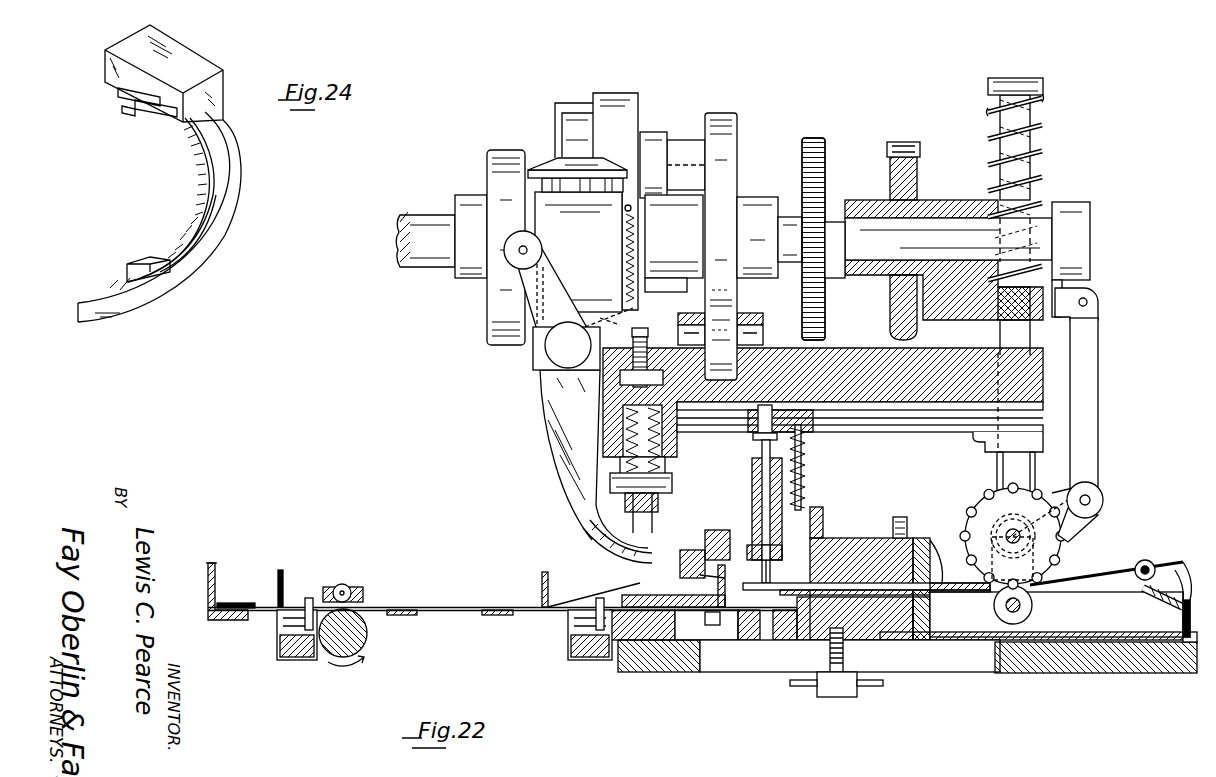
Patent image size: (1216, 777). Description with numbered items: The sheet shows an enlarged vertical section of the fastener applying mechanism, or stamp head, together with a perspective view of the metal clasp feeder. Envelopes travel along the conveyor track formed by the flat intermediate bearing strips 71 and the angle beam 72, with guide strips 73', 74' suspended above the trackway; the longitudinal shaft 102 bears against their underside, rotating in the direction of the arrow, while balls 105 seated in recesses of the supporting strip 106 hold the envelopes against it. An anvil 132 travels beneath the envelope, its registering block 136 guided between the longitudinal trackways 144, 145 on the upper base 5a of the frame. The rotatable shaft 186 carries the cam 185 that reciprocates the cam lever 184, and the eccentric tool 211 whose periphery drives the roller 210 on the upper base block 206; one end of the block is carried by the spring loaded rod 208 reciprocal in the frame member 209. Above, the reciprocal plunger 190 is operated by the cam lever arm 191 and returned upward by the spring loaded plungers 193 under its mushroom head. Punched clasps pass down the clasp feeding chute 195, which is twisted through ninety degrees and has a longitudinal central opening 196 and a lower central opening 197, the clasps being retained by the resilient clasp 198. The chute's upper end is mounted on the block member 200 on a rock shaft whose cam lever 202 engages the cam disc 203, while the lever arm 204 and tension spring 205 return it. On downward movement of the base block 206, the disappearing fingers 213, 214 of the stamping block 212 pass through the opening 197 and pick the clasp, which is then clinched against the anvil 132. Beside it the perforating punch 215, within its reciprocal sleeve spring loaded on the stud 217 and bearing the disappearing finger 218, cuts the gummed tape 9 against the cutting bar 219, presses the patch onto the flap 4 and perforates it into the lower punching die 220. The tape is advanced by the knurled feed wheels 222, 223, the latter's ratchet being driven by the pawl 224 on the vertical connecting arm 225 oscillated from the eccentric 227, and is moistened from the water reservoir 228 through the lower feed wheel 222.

In FIG. 22, the flap 4 is at (728, 612).
In FIG. 22, the upper base 5a is at (1020, 675).
In FIG. 22, the gummed tape 9 is at (795, 583).
In FIG. 22, the flat intermediate bearing strips 71 is at (482, 612).
In FIG. 22, the angle beam 72 is at (215, 578).
In FIG. 22, the guide strip 73' is at (299, 603).
In FIG. 22, the guide strip 74' is at (556, 610).
In FIG. 22, the longitudinal shaft 102 is at (367, 633).
In FIG. 22, the balls 105 is at (345, 587).
In FIG. 22, the supporting strip 106 is at (363, 590).
In FIG. 22, the anvil 132 is at (683, 587).
In FIG. 22, the registering block 136 is at (752, 565).
In FIG. 22, the longitudinal trackway 144 is at (717, 530).
In FIG. 22, the longitudinal trackway 145 is at (687, 550).
In FIG. 22, the cam lever 184 is at (653, 140).
In FIG. 22, the cam 185 is at (640, 306).
In FIG. 22, the rotatable shaft 186 is at (785, 220).
In FIG. 22, the reciprocal plunger 190 is at (563, 185).
In FIG. 22, the cam lever arm 191 is at (573, 118).
In FIG. 22, the spring loaded plungers 193 is at (538, 187).
In FIG. 24, the clasp feeding chute 195 is at (193, 280).
In FIG. 22, the clasp feeding chute 195 is at (555, 390).
In FIG. 24, the longitudinal central opening 196 is at (220, 242).
In FIG. 24, the central opening 197 is at (137, 280).
In FIG. 22, the central opening 197 is at (632, 557).
In FIG. 22, the resilient clasp 198 is at (607, 555).
In FIG. 24, the block member 200 is at (197, 63).
In FIG. 22, the block member 200 is at (533, 352).
In FIG. 22, the cam lever 202 is at (547, 287).
In FIG. 22, the cam disc 203 is at (497, 300).
In FIG. 22, the lever arm 204 is at (608, 317).
In FIG. 22, the tension spring 205 is at (625, 248).
In FIG. 22, the upper base block 206 is at (840, 357).
In FIG. 22, the spring loaded rod 208 is at (1033, 337).
In FIG. 22, the frame member 209 is at (932, 317).
In FIG. 22, the roller 210 is at (732, 308).
In FIG. 22, the eccentric tool 211 is at (728, 148).
In FIG. 22, the stamping block 212 is at (668, 497).
In FIG. 22, the spring loaded disappearing finger 213 is at (633, 525).
In FIG. 22, the spring loaded disappearing finger 214 is at (652, 523).
In FIG. 22, the perforating punch 215 is at (765, 447).
In FIG. 22, the stud 217 is at (803, 475).
In FIG. 22, the spring loaded disappearing finger 218 is at (757, 570).
In FIG. 22, the cutting bar 219 is at (797, 595).
In FIG. 22, the lower punching die 220 is at (763, 633).
In FIG. 22, the knurled feed wheel 222 is at (1028, 605).
In FIG. 22, the knurled feed wheel 223 is at (1047, 557).
In FIG. 22, the pawl 224 is at (1083, 522).
In FIG. 22, the vertical connecting arm 225 is at (1088, 457).
In FIG. 22, the eccentric 227 is at (1090, 273).
In FIG. 22, the water reservoir 228 is at (1102, 613).